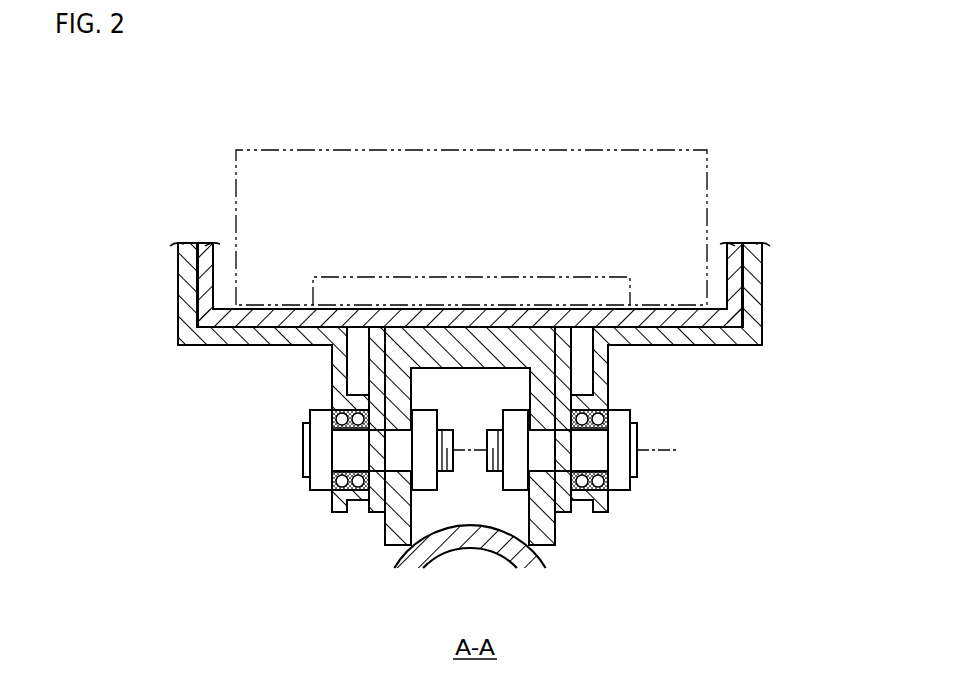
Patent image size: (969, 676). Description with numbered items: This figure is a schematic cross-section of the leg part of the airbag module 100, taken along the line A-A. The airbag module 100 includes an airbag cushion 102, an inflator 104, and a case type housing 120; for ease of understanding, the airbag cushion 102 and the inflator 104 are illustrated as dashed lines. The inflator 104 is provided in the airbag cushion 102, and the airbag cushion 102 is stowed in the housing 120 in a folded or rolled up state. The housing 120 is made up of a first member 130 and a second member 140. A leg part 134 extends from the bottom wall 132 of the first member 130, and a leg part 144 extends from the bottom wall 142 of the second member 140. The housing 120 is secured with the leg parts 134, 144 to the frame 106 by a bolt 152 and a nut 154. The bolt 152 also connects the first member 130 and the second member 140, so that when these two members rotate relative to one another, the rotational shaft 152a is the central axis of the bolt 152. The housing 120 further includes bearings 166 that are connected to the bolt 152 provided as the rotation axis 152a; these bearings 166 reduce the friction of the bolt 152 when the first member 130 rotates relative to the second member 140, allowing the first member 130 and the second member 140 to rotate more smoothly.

The airbag module 100 is at (773, 130).
The airbag cushion 102 is at (481, 158).
The inflator 104 is at (555, 280).
The frame 106 is at (547, 527).
The housing 120 is at (780, 305).
The first member 130 is at (178, 302).
The bottom wall 132 is at (262, 340).
The leg part 134 is at (340, 372).
The second member 140 is at (208, 263).
The bottom wall 142 is at (700, 313).
The leg part 144 is at (377, 348).
The bolt 152 is at (345, 452).
The rotational shaft 152a is at (652, 452).
The nut 154 is at (422, 480).
The bearings 166 is at (333, 495).